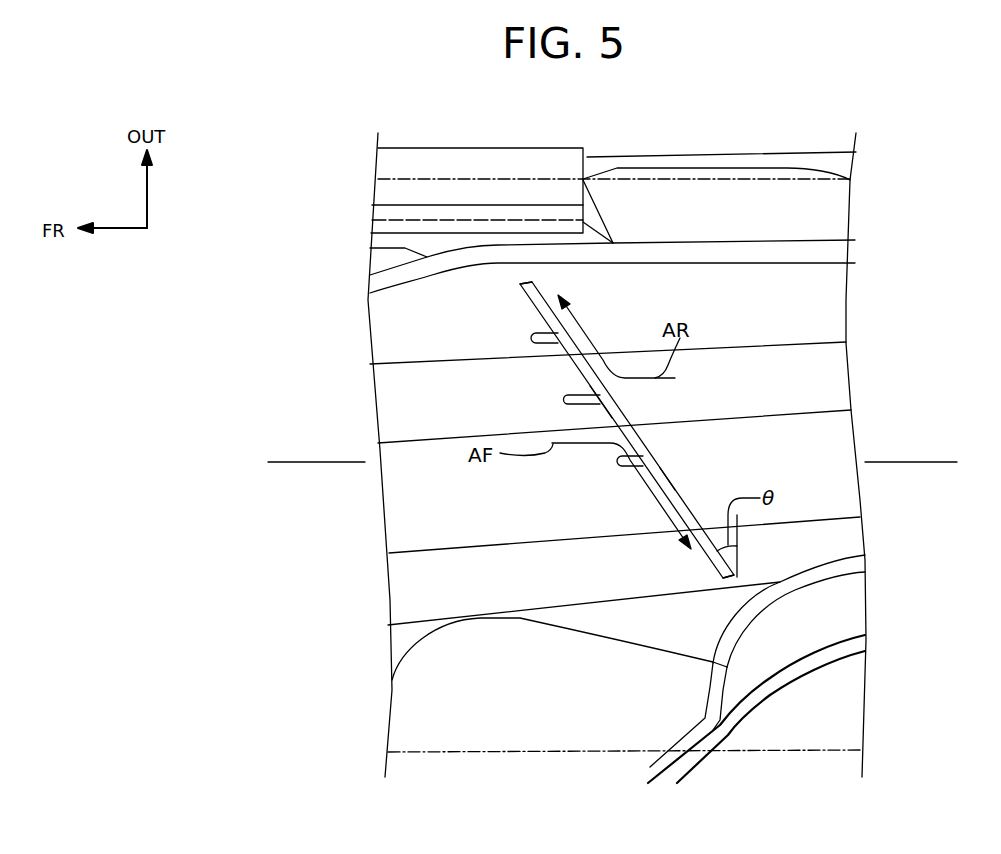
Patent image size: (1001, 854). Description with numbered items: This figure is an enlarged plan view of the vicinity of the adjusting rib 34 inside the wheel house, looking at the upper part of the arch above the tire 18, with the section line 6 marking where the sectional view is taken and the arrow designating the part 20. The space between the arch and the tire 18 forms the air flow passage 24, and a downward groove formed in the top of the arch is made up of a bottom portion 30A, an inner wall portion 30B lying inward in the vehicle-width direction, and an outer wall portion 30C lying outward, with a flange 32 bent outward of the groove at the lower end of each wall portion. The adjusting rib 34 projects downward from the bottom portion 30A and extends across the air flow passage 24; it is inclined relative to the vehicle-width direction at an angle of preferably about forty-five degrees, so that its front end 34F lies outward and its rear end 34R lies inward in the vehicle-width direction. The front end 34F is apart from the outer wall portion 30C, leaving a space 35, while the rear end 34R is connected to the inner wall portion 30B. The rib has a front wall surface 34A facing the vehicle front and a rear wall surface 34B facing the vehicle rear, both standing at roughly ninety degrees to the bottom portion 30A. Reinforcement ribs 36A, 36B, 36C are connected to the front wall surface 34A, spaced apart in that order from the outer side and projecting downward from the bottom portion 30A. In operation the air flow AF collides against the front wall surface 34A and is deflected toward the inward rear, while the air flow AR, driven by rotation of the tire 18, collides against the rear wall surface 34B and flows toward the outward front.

The section line 6 is at (611, 466).
The tire 18 is at (806, 753).
The vehicle side body 20 is at (876, 343).
The air flow passage 24 is at (744, 393).
The bottom portion 30A is at (817, 378).
The inner wall portion 30B is at (763, 553).
The outer wall portion 30C is at (823, 252).
The flange 32 is at (833, 212).
The adjusting rib 34 is at (629, 416).
The front wall surface 34A is at (613, 418).
The rear wall surface 34B is at (676, 490).
The front end 34F is at (522, 285).
The rear end 34R is at (713, 565).
The space 35 is at (531, 272).
The reinforcement rib 36A is at (530, 337).
The reinforcement rib 36B is at (563, 398).
The reinforcement rib 36C is at (617, 463).